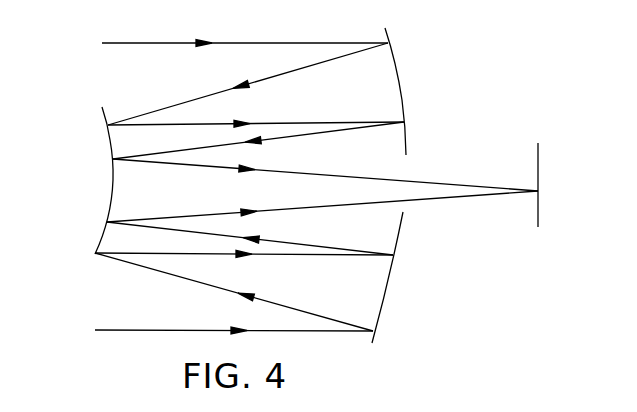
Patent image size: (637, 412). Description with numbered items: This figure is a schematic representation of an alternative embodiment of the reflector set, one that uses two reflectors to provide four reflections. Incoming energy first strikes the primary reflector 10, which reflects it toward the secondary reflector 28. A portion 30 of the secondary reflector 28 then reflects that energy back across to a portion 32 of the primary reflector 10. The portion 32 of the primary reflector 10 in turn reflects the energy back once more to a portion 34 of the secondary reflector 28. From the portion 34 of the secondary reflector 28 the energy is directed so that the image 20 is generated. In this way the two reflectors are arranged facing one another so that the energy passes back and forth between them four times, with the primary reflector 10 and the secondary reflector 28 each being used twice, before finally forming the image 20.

The primary reflector 10 is at (410, 185).
The portion of primary reflector 32 is at (405, 109).
The image 20 is at (539, 157).
The secondary reflector 28 is at (76, 174).
The portion of secondary reflector 30 is at (108, 125).
The portion of secondary reflector 34 is at (112, 159).